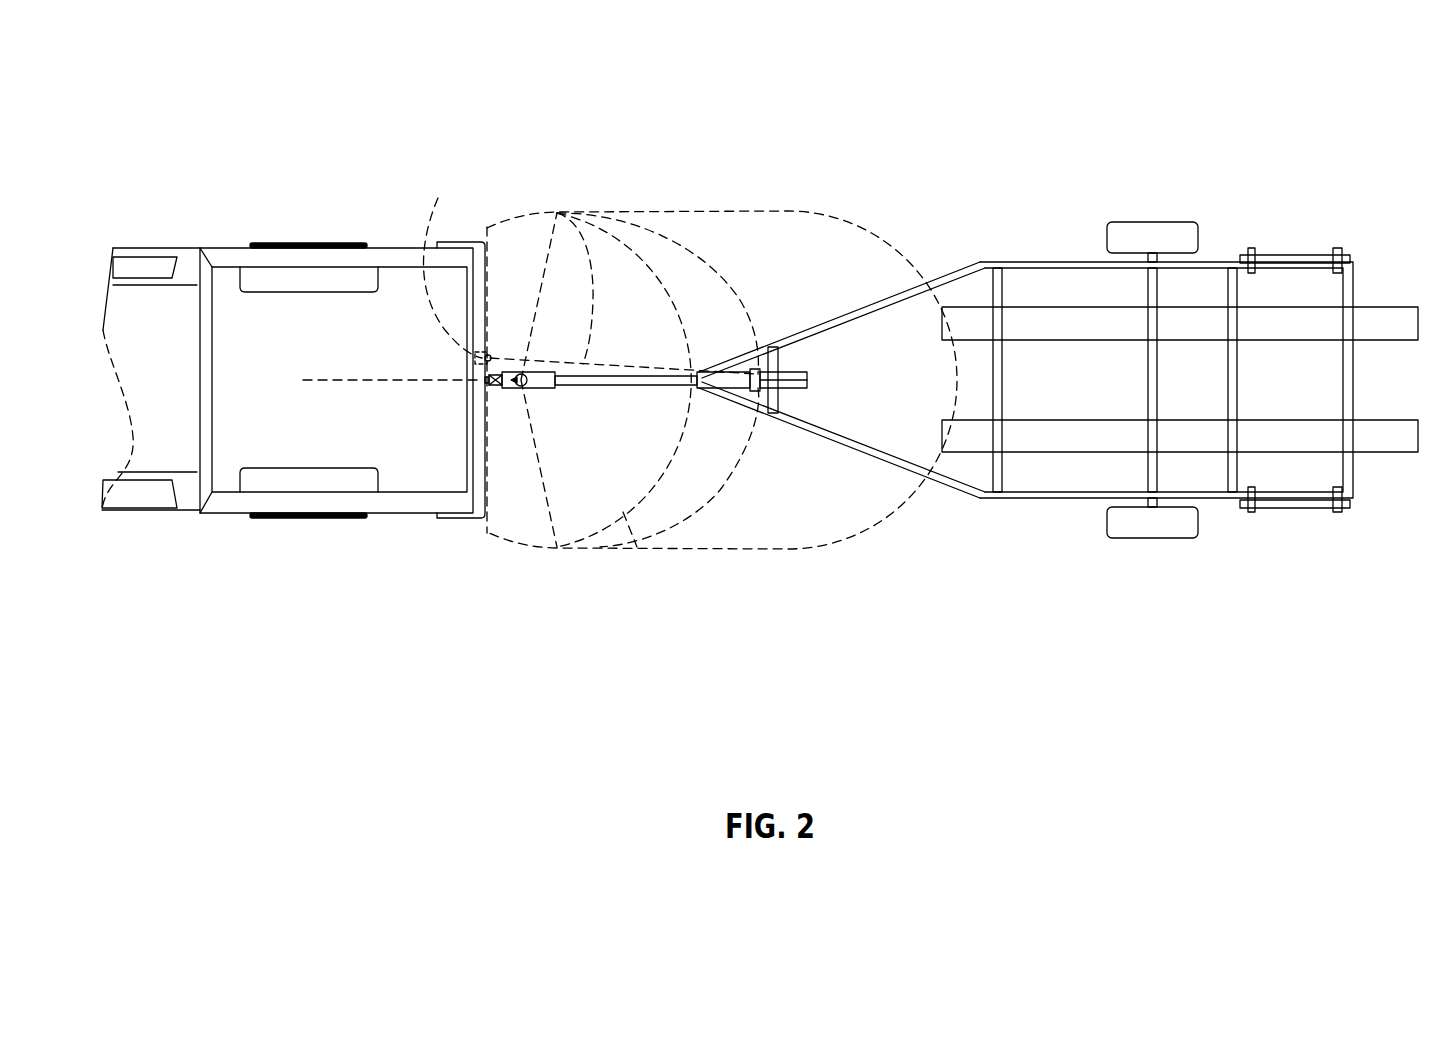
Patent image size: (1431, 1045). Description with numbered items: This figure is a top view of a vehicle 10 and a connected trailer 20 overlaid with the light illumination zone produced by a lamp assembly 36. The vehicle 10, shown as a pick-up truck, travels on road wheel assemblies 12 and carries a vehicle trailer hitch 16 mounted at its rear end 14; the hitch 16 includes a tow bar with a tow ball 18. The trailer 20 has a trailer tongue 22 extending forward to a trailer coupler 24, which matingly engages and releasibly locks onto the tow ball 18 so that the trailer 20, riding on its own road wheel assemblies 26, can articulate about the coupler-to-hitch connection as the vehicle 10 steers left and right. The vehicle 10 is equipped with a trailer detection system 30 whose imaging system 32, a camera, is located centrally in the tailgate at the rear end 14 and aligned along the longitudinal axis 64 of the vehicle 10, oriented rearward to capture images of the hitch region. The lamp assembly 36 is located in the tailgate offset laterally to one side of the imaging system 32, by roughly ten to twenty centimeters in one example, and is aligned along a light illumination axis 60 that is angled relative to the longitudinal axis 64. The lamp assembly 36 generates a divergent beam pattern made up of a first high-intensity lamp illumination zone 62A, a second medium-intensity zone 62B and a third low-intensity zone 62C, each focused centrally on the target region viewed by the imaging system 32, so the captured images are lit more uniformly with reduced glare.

The vehicle 10 is at (188, 228).
The road wheel assemblies 12 is at (297, 245).
The rear end 14 is at (488, 497).
The vehicle trailer hitch 16 is at (484, 368).
The tow ball 18 is at (522, 387).
The trailer 20 is at (1307, 230).
The trailer tongue 22 is at (643, 388).
The trailer coupler 24 is at (543, 387).
The road wheel assemblies 26 is at (1147, 232).
The trailer detection system 30 is at (512, 345).
The imaging system 32 is at (488, 388).
The lamp assembly 36 is at (452, 264).
The light illumination axis 60 is at (556, 211).
The first lamp illumination zone 62A is at (613, 227).
The second lamp illumination zone 62B is at (688, 227).
The third lamp illumination zone 62C is at (742, 211).
The longitudinal axis 64 is at (340, 378).